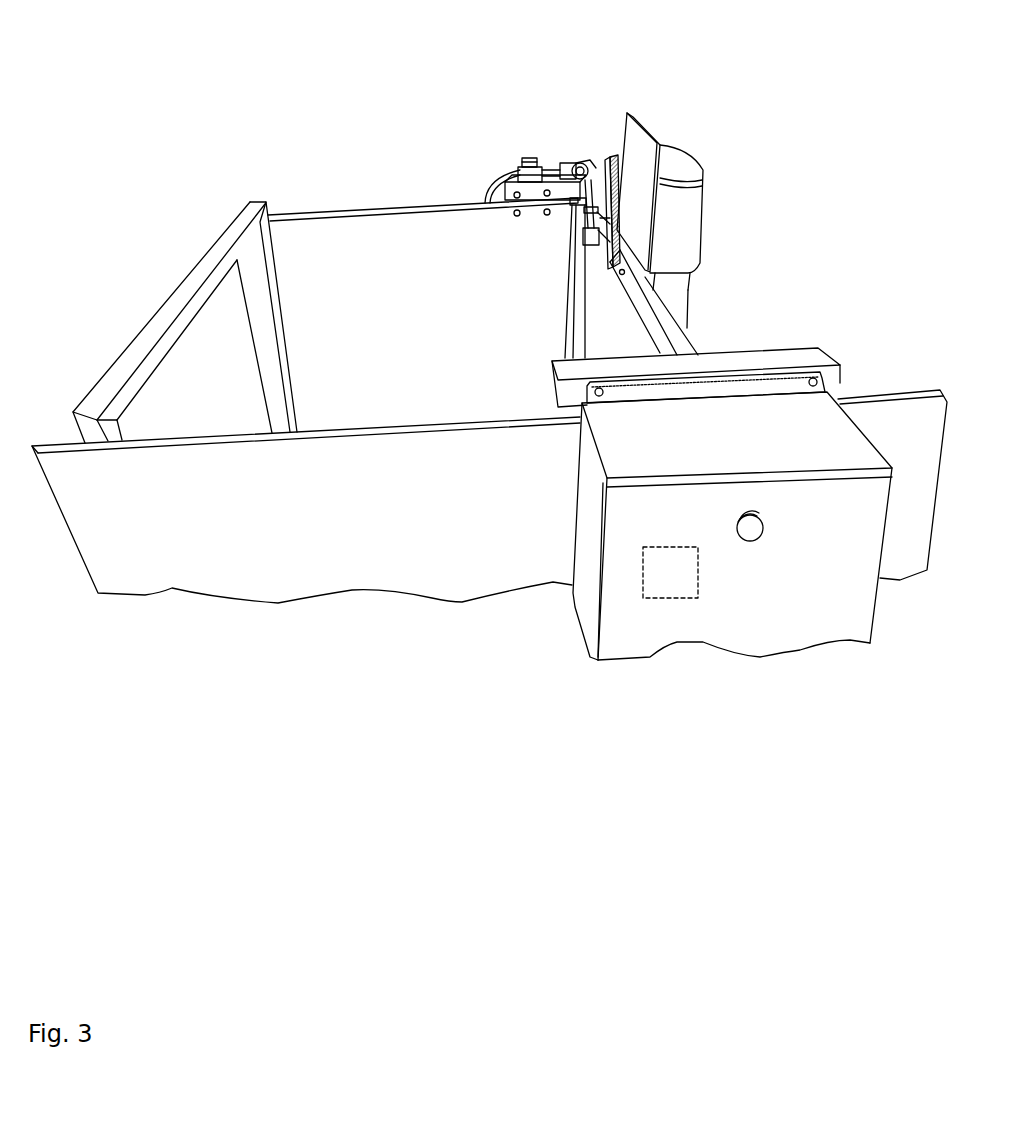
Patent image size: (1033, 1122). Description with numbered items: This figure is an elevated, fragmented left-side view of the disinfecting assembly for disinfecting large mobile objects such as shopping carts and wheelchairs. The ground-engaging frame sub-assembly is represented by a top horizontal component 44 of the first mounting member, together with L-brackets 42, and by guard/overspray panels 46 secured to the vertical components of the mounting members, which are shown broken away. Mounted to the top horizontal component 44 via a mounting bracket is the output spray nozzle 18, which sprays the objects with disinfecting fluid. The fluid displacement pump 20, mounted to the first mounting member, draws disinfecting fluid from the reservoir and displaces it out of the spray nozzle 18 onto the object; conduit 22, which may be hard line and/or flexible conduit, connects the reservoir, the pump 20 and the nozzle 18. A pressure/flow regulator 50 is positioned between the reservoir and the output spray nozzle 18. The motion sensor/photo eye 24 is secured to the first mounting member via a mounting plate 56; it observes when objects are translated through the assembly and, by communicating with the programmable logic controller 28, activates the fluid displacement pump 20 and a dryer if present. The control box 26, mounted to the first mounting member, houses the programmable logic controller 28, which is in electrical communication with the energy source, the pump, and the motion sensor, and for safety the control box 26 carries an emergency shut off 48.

The output spray nozzle 18 is at (592, 246).
The fluid displacement pump 20 is at (529, 158).
The conduit 22 is at (492, 173).
The motion sensor/photo eye 24 is at (675, 168).
The control box 26 is at (830, 612).
The programmable logic controller 28 is at (670, 573).
The L-brackets 42 is at (797, 357).
The top horizontal component 44 is at (168, 310).
The guard/overspray panel 46 is at (347, 250).
The emergency shut off 48 is at (762, 530).
The pressure/flow regulator 50 is at (573, 152).
The mounting plate 56 is at (631, 113).